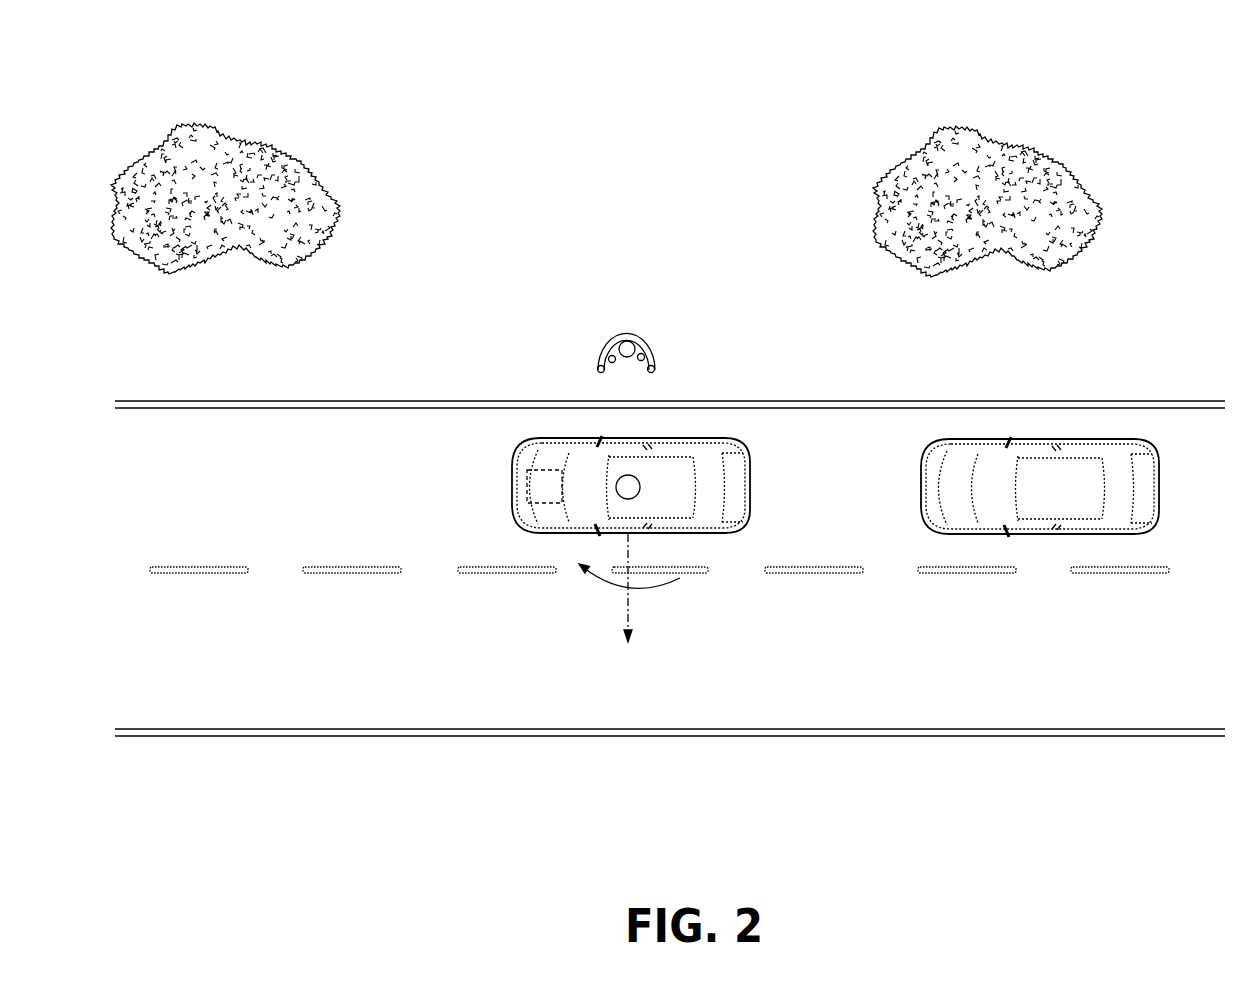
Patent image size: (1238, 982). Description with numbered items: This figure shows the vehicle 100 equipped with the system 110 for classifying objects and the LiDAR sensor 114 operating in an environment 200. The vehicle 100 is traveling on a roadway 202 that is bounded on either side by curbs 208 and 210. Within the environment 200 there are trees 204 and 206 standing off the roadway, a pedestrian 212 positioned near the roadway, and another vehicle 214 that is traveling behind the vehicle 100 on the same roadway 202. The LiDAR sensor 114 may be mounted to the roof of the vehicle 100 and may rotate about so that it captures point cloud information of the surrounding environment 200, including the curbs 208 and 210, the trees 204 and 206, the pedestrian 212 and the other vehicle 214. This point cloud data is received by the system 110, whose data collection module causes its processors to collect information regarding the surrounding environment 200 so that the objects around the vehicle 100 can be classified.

The environment 200 is at (747, 103).
The vehicle 100 is at (601, 500).
The system 110 is at (515, 475).
The LiDAR sensor 114 is at (631, 476).
The roadway 202 is at (628, 568).
The tree 204 is at (248, 146).
The tree 206 is at (1005, 148).
The curb 208 is at (380, 408).
The curb 210 is at (370, 737).
The pedestrian 212 is at (628, 333).
The another vehicle 214 is at (1161, 488).